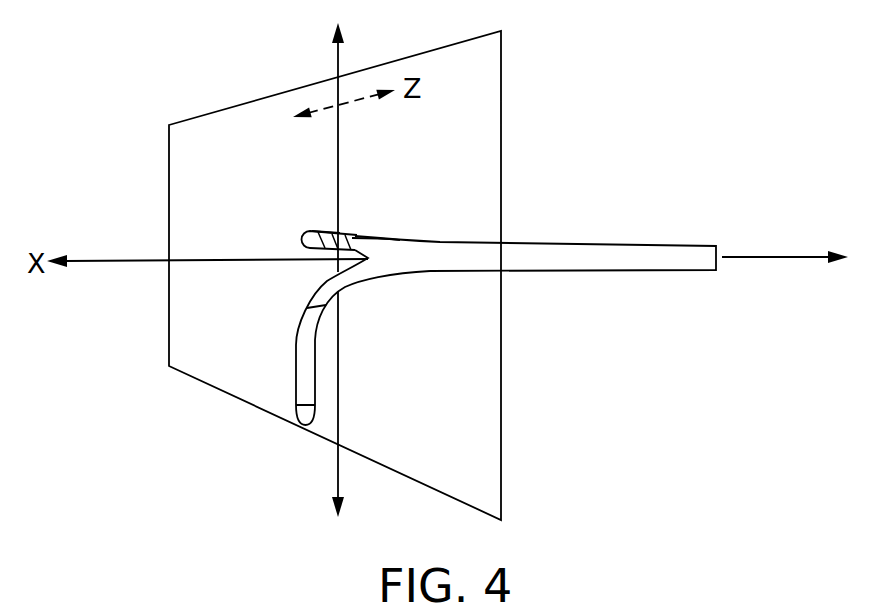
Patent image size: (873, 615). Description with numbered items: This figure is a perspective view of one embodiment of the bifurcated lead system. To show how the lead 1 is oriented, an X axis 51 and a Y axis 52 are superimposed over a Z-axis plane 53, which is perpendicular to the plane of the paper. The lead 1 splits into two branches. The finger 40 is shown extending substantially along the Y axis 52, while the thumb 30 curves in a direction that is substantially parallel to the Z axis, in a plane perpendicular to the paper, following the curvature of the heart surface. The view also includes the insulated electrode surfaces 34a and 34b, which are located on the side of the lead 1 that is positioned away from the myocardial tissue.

The lead 1 is at (615, 288).
The thumb 30 is at (309, 220).
The insulated electrode surface 34a is at (352, 238).
The insulated electrode surface 34b is at (325, 231).
The finger 40 is at (274, 368).
The X axis 51 is at (755, 258).
The Y axis 52 is at (338, 63).
The Z-axis plane 53 is at (475, 168).